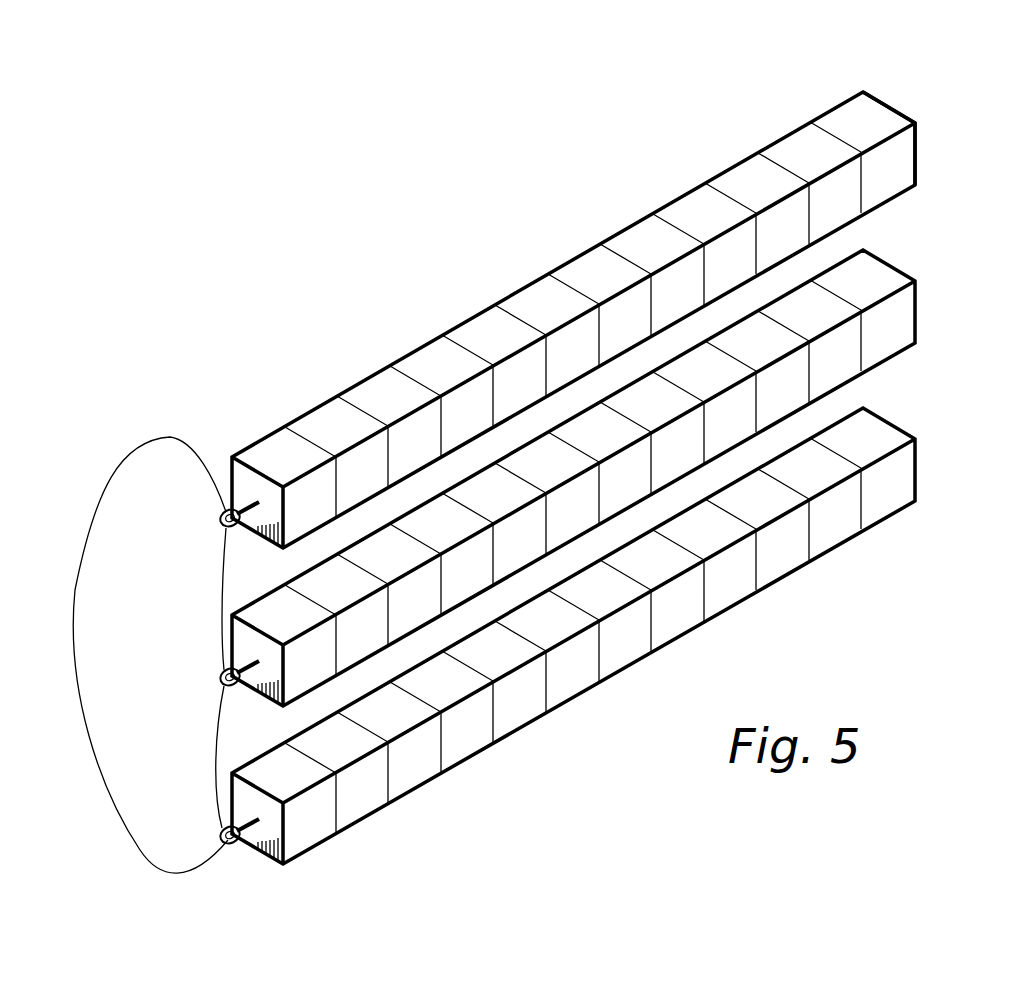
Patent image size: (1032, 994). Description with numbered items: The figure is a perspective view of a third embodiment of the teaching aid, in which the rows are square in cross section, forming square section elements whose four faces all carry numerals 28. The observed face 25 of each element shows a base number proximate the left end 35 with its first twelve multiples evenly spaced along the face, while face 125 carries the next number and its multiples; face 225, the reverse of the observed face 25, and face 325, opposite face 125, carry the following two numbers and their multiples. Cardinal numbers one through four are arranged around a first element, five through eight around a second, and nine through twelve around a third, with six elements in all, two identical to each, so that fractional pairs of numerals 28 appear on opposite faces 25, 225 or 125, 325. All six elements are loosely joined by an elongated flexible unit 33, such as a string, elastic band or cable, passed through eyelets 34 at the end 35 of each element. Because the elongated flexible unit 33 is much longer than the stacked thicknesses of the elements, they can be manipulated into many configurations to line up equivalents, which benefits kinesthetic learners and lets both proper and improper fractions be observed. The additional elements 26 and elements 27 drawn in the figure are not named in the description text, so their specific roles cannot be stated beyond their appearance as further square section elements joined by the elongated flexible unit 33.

The number rod 25 is at (622, 306).
The rod end 125 is at (883, 118).
The numeral indicia 28 is at (432, 356).
The eyelet 225 is at (230, 508).
The aperture 325 is at (250, 547).
The ring 34 is at (219, 679).
The pin 35 is at (252, 690).
The cord 33 is at (108, 800).
The second number rod 26 is at (573, 478).
The third number rod 27 is at (573, 636).